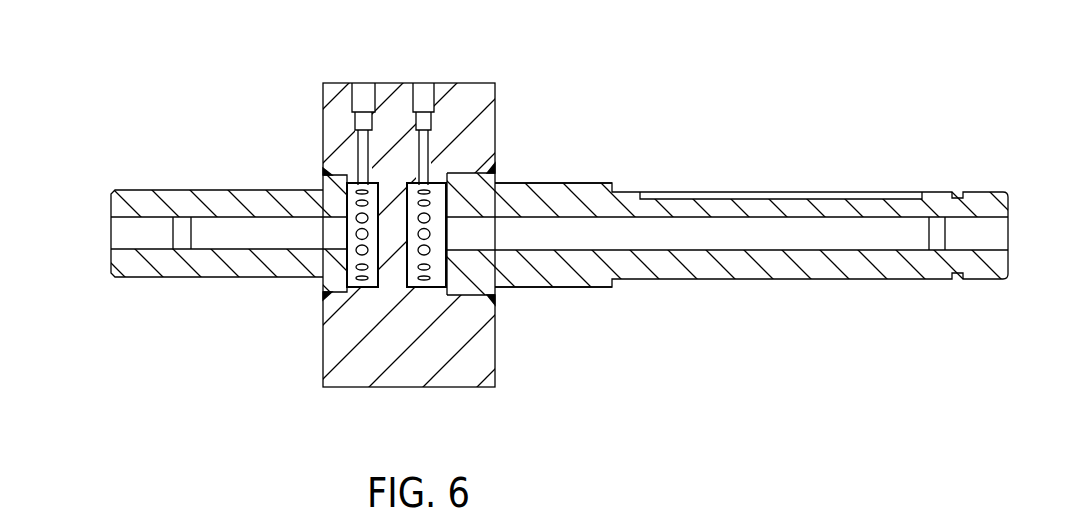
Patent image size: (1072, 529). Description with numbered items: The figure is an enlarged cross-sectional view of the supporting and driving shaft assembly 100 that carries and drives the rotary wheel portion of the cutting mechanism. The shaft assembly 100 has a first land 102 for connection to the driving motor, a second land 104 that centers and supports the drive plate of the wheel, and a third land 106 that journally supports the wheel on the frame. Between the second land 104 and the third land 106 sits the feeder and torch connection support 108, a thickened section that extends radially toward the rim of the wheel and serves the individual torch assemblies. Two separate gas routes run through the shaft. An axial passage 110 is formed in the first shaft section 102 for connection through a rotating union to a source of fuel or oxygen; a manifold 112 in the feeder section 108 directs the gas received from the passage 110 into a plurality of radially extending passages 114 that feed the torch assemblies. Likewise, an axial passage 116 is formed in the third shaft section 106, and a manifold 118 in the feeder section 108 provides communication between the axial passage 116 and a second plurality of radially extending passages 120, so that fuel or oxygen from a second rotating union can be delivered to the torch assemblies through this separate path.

The supporting and driving shaft assembly 100 is at (186, 133).
The first land 102 is at (842, 280).
The second land 104 is at (567, 182).
The third land 106 is at (187, 277).
The feeder and torch connection support 108 is at (400, 387).
The axial passage 110 is at (892, 232).
The manifold 112 is at (440, 272).
The radially extending passages 114 is at (425, 90).
The axial passage 116 is at (122, 228).
The manifold 118 is at (350, 285).
The radially extending passages 120 is at (365, 92).